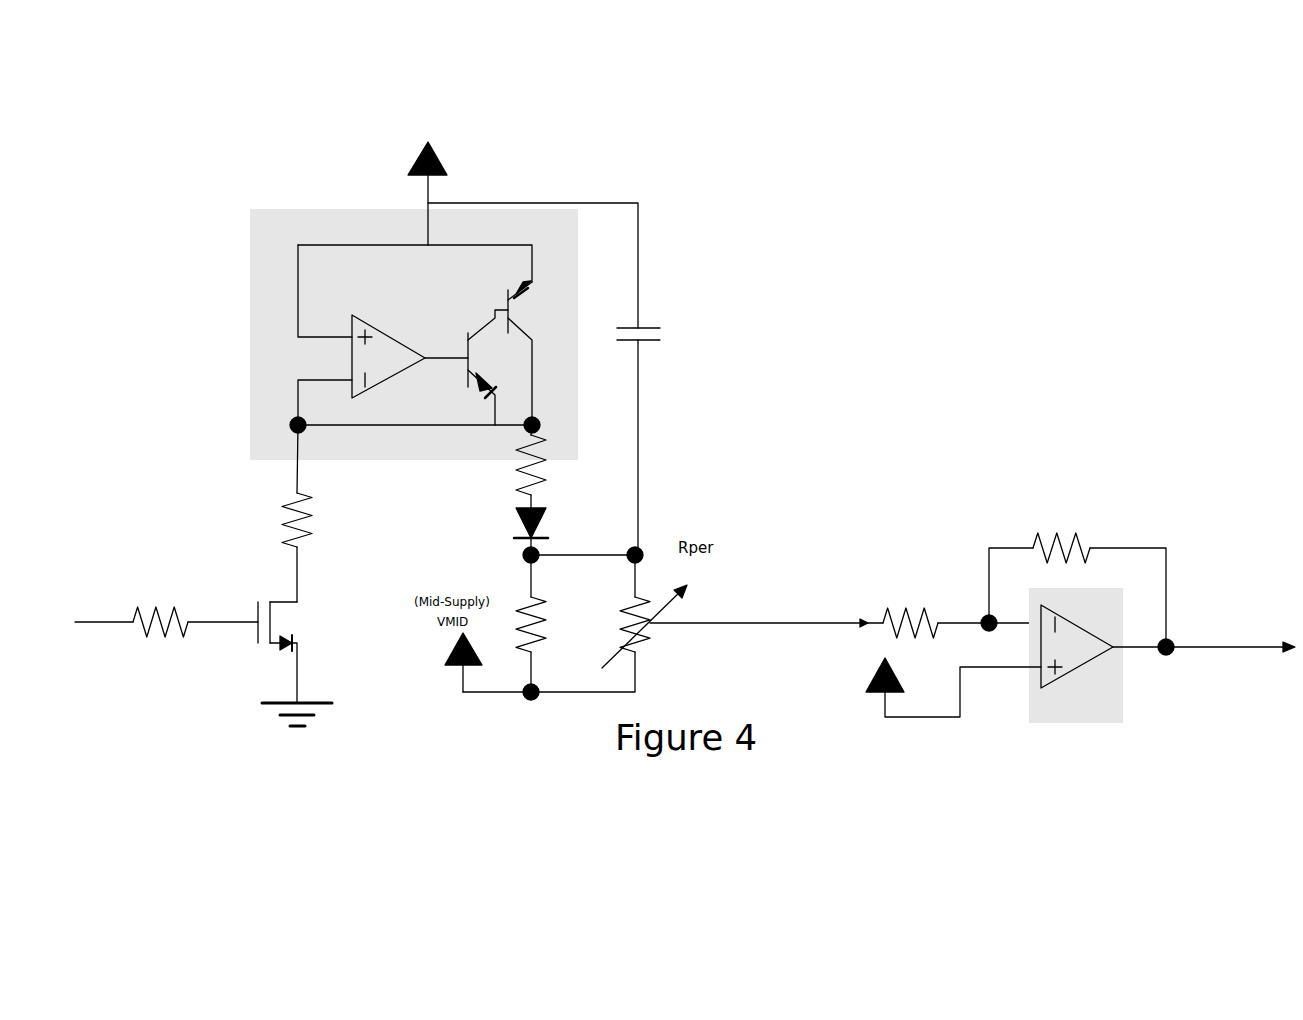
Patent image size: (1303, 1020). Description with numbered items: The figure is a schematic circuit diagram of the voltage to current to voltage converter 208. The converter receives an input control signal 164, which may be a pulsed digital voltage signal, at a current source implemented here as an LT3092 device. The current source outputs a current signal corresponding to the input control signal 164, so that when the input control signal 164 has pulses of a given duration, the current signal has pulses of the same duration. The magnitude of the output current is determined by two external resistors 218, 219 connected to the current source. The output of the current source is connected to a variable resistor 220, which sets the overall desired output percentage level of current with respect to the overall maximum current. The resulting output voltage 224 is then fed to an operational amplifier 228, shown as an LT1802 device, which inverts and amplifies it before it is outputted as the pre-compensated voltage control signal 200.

The voltage to current to voltage converter 208 is at (238, 204).
The external resistor 218 is at (285, 505).
The external resistor 219 is at (517, 478).
The variable resistor 220 is at (652, 648).
The output voltage 224 is at (722, 623).
The operational amplifier 228 is at (1078, 622).
The pre-compensated voltage control signal 200 is at (1185, 640).
The input control signal 164 is at (113, 622).